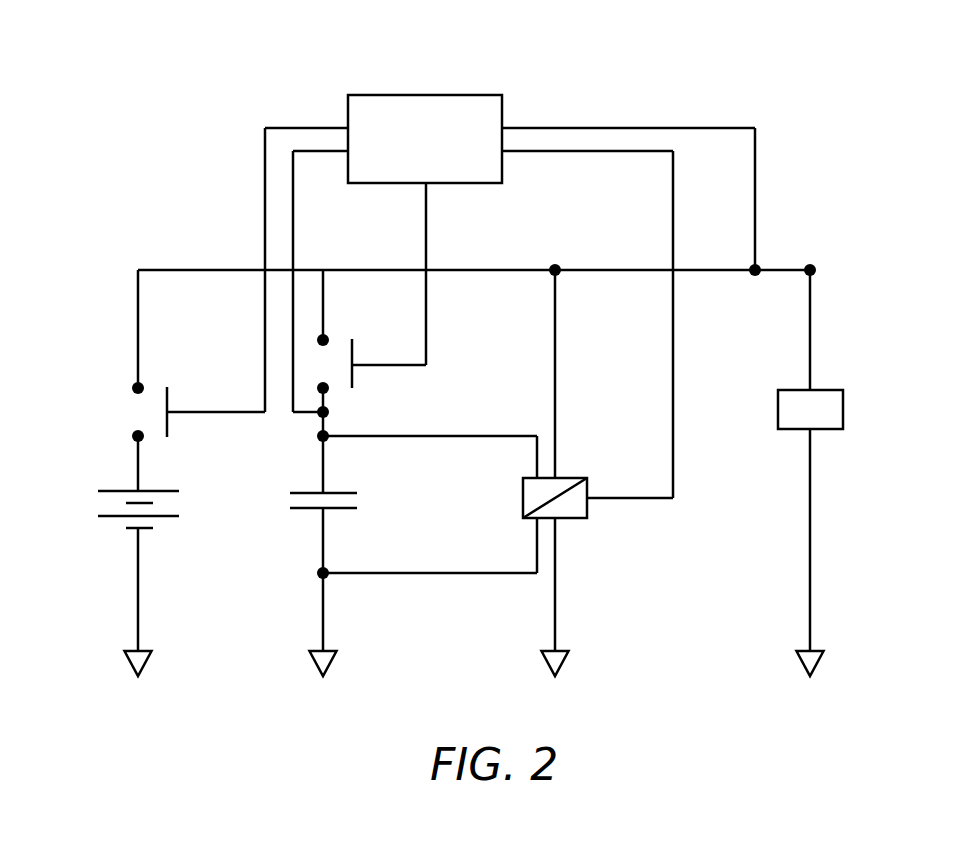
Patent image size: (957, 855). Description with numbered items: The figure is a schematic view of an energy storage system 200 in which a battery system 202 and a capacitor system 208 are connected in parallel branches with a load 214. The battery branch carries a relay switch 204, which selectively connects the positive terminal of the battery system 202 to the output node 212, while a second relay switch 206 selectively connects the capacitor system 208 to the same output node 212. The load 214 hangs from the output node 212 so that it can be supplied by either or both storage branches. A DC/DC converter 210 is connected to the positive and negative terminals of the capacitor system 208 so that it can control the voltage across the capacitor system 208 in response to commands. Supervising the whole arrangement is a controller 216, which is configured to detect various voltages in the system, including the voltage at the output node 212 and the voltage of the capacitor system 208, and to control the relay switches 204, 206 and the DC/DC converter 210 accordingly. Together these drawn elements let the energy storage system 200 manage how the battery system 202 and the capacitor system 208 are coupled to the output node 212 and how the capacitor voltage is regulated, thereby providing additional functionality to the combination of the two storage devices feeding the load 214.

The energy storage system 200 is at (835, 65).
The battery system 202 is at (103, 488).
The relay switch 204 is at (173, 384).
The relay switch 206 is at (360, 337).
The capacitor system 208 is at (297, 492).
The DC/DC converter 210 is at (572, 478).
The output node 212 is at (815, 264).
The load 214 is at (826, 390).
The controller 216 is at (489, 95).